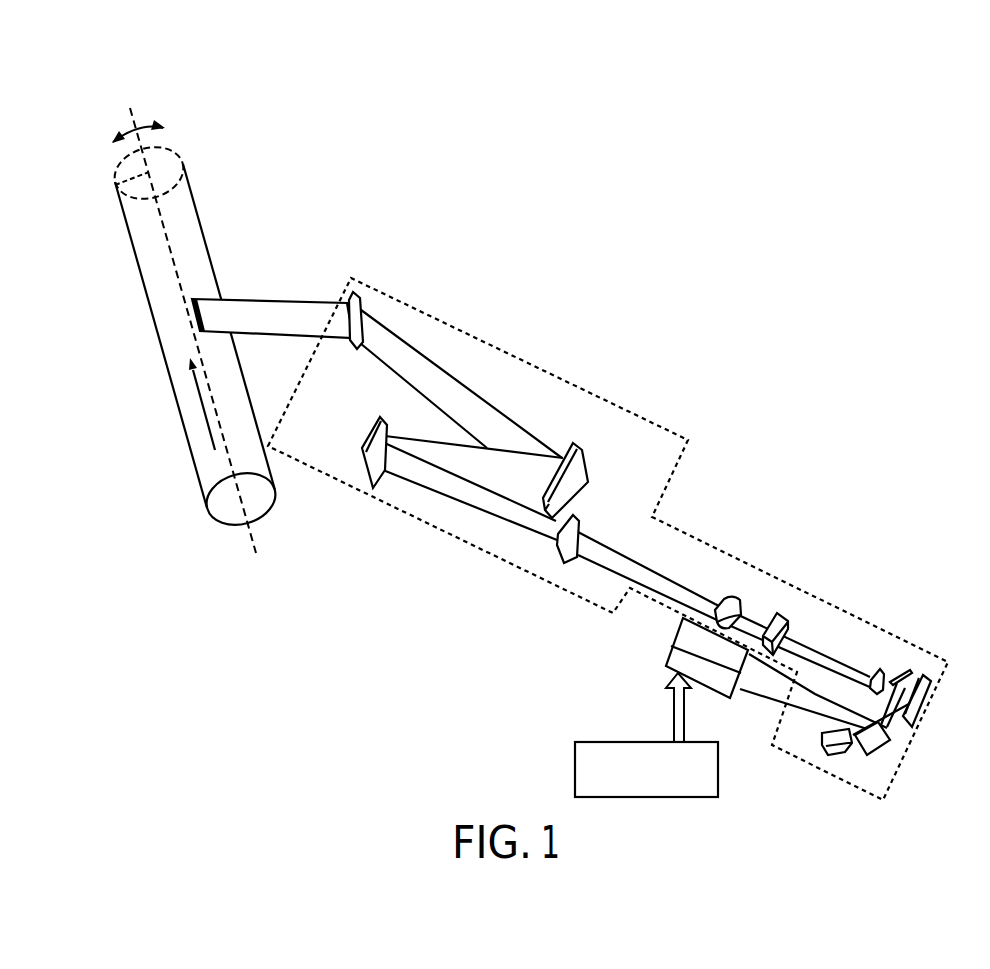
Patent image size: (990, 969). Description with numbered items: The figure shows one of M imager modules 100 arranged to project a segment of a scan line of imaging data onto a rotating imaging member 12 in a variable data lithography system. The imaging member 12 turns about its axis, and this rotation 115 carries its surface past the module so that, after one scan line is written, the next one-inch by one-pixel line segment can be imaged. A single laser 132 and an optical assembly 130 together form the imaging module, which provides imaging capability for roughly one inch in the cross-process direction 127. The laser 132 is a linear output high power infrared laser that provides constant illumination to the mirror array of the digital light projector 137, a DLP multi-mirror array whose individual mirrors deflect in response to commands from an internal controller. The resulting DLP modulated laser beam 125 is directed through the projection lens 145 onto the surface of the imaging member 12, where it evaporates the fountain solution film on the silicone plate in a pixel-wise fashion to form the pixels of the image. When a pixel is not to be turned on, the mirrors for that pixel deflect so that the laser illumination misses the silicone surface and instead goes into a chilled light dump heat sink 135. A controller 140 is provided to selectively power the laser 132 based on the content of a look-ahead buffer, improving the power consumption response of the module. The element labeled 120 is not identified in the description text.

The imager module 100 is at (62, 178).
The imaging member 12 is at (196, 476).
The rotation 115 is at (142, 125).
The rotating drum 120 is at (162, 314).
The DLP modulated laser beam 125 is at (278, 297).
The cross-process direction 127 is at (202, 405).
The optical assembly 130 is at (744, 557).
The laser 132 is at (676, 643).
The chilled light dump heat sink 135 is at (831, 749).
The digital light projector 137 is at (924, 699).
The controller 140 is at (575, 767).
The projection lens 145 is at (356, 350).